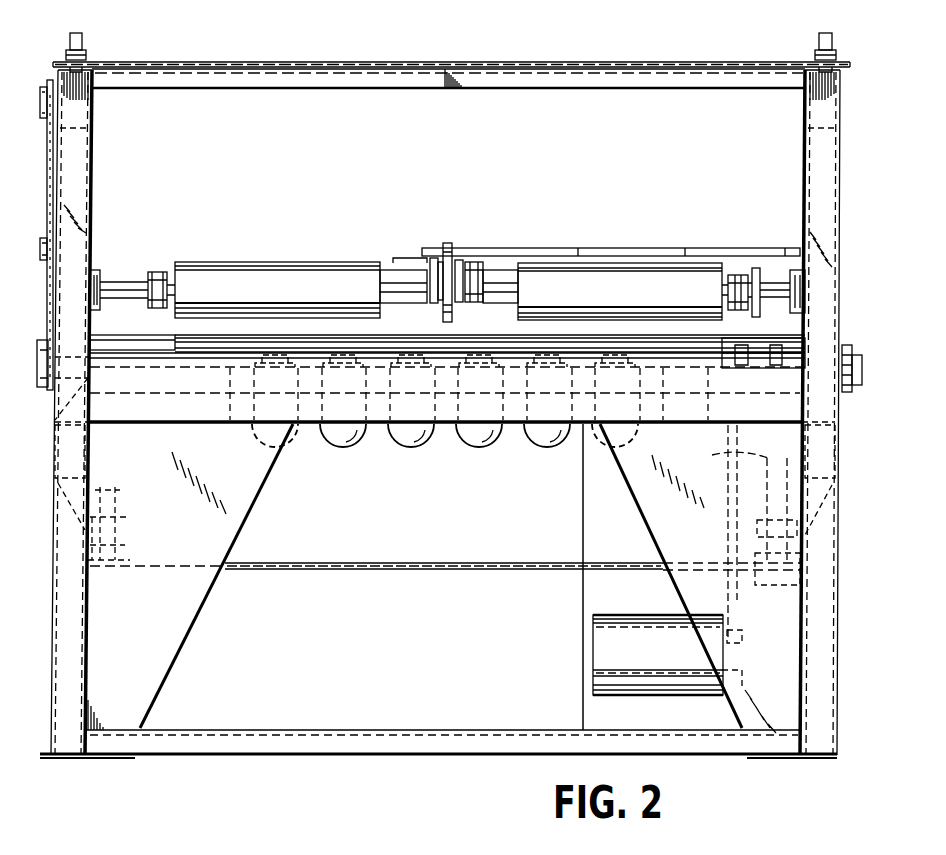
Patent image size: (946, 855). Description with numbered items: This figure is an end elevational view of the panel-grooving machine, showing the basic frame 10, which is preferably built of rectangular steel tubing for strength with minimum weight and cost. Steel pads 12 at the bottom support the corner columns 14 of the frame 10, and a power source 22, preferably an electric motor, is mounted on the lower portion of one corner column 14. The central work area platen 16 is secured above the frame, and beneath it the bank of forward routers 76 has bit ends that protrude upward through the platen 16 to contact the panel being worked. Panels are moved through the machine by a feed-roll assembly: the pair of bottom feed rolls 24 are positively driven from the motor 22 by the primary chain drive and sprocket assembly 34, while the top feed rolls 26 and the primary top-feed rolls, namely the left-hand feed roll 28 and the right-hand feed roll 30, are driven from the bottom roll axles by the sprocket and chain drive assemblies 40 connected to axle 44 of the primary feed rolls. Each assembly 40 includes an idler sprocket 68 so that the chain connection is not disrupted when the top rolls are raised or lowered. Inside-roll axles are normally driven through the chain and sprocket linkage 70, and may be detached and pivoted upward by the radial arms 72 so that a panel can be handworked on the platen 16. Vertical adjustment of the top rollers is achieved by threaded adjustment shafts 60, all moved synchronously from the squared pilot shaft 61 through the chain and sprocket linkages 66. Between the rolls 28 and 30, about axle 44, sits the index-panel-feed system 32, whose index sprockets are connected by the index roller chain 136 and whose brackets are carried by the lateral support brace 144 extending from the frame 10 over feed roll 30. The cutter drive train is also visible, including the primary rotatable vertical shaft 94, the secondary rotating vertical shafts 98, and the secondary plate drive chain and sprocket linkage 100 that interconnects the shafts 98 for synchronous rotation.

The frame 10 is at (858, 165).
The steel pads 12 is at (78, 757).
The corner columns 14 is at (826, 220).
The central work area platen 16 is at (150, 346).
The power source 22 is at (613, 658).
The bottom feed rolls 24 is at (197, 355).
The top feed rolls 26 is at (380, 302).
The left-hand feed roll 28 is at (247, 283).
The right-hand feed roll 30 is at (618, 283).
The index-panel-feed system 32 is at (400, 257).
The primary chain drive and sprocket assembly 34 is at (728, 594).
The sprocket and chain drive assemblies 40 is at (50, 200).
The axle 44 is at (115, 288).
The threaded adjustment shafts 60 is at (817, 52).
The pilot shaft 61 is at (85, 40).
The chain and sprocket linkages 66 is at (480, 62).
The idler sprocket 68 is at (43, 249).
The chain and sprocket linkage 70 is at (758, 278).
The radial arms 72 is at (159, 275).
The forward routers 76 is at (467, 432).
The primary rotatable vertical shaft 94 is at (728, 458).
The secondary rotating vertical shafts 98 is at (117, 505).
The secondary plate drive shaft chain and sprocket linkage 100 is at (527, 563).
The index roller chain 136 is at (455, 247).
The lateral support brace 144 is at (547, 252).